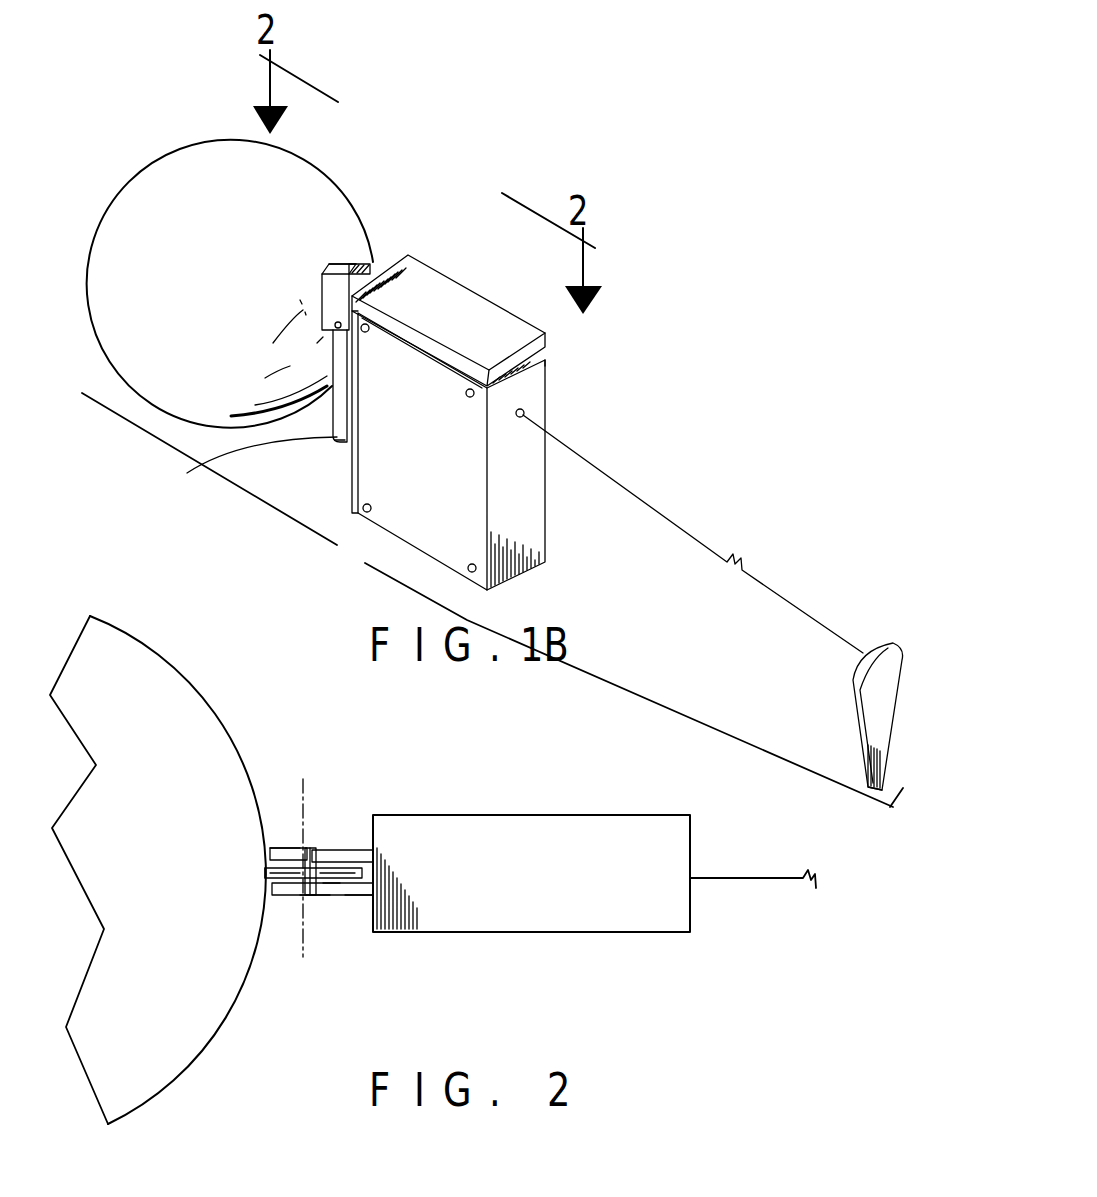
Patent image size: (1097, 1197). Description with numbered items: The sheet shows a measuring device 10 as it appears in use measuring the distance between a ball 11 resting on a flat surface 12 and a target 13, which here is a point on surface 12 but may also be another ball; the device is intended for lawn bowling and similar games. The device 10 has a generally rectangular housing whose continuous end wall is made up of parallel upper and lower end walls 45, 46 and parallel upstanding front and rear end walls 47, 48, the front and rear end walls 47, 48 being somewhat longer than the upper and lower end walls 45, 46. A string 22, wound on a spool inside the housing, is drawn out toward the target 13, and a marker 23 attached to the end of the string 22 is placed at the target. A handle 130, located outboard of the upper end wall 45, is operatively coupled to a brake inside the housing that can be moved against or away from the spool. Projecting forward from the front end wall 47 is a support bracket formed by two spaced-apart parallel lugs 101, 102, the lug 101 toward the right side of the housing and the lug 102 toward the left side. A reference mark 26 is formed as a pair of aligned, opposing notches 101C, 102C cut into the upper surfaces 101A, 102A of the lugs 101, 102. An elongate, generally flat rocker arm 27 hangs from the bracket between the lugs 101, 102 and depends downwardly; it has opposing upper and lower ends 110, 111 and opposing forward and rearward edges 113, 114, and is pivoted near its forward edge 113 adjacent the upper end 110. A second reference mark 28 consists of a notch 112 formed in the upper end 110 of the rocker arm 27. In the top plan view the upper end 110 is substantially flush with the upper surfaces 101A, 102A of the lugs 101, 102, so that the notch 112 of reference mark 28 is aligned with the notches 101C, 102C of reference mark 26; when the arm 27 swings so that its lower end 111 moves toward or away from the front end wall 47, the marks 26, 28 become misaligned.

In FIG. 1B, the measuring device 10 is at (686, 352).
In FIG. 2, the measuring device 10 is at (592, 770).
In FIG. 1B, the ball 11 is at (317, 197).
In FIG. 2, the ball 11 is at (185, 727).
In FIG. 1B, the flat surface 12 is at (357, 553).
In FIG. 1B, the target 13 is at (904, 770).
In FIG. 1B, the string 22 is at (667, 517).
In FIG. 1B, the marker 23 is at (897, 690).
In FIG. 1B, the reference mark 26 is at (378, 258).
In FIG. 2, the reference mark 26 is at (312, 846).
In FIG. 1B, the rocker arm 27 is at (250, 476).
In FIG. 1B, the reference mark 28 is at (323, 281).
In FIG. 2, the reference mark 28 is at (332, 884).
In FIG. 1B, the upper end wall 45 is at (418, 343).
In FIG. 1B, the lower end wall 46 is at (413, 548).
In FIG. 1B, the front end wall 47 is at (352, 467).
In FIG. 1B, the rear end wall 48 is at (537, 513).
In FIG. 2, the lug 101 is at (335, 848).
In FIG. 2, the upper surface of lug 101A is at (267, 868).
In FIG. 2, the notch 101C is at (276, 848).
In FIG. 2, the lug 102 is at (300, 893).
In FIG. 2, the upper surface of lug 102A is at (362, 895).
In FIG. 2, the notch 102C is at (318, 896).
In FIG. 1B, the upper end of rocker arm 110 is at (366, 268).
In FIG. 1B, the lower end of rocker arm 111 is at (337, 435).
In FIG. 2, the notch 112 is at (264, 875).
In FIG. 1B, the forward edge 113 is at (328, 371).
In FIG. 1B, the rearward edge 114 is at (347, 428).
In FIG. 1B, the handle 130 is at (470, 312).
In FIG. 2, the handle 130 is at (598, 905).